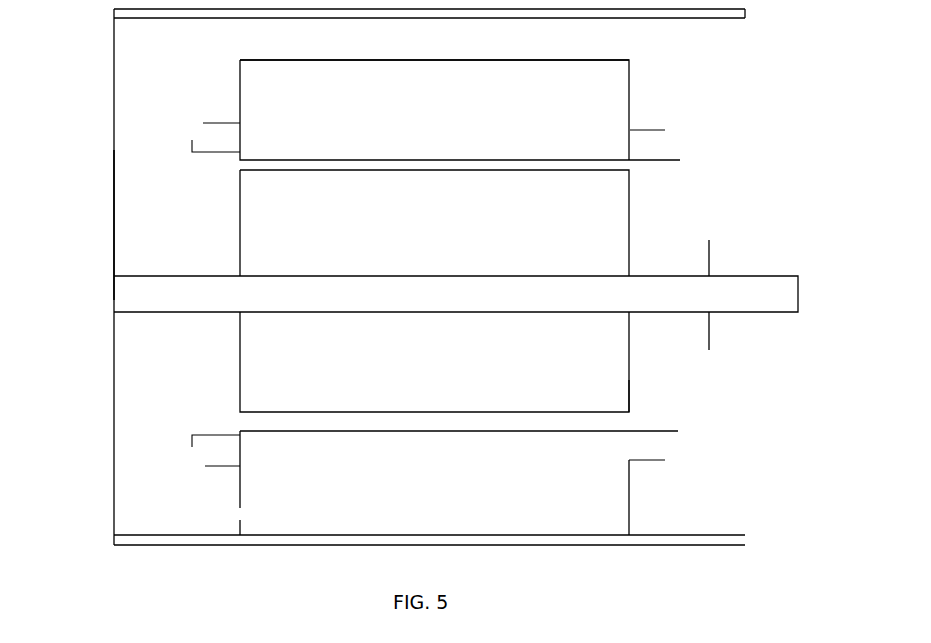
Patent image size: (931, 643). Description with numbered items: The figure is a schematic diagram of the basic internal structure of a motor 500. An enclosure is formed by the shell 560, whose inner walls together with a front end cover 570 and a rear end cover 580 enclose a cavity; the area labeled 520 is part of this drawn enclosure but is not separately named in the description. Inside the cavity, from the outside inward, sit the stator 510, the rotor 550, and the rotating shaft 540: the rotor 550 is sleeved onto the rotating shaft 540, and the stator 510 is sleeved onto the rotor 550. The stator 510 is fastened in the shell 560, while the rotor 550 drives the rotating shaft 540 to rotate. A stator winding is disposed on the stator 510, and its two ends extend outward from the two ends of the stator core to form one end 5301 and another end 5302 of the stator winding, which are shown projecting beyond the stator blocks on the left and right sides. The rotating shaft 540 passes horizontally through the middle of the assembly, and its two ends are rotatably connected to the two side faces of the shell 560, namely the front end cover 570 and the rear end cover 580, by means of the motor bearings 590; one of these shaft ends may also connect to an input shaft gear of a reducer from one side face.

The motor 500 is at (657, 396).
The stator 510 is at (460, 297).
The housing / substrate 520 is at (393, 277).
The rotating shaft 540 is at (456, 294).
The rotor 550 is at (434, 291).
The shell 560 is at (434, 44).
The front end cover 570 is at (68, 221).
The rear end cover 580 is at (793, 73).
The motor bearings 590 is at (776, 295).
The end of the stator winding 5301 is at (197, 295).
The end of the stator winding 5302 is at (674, 298).